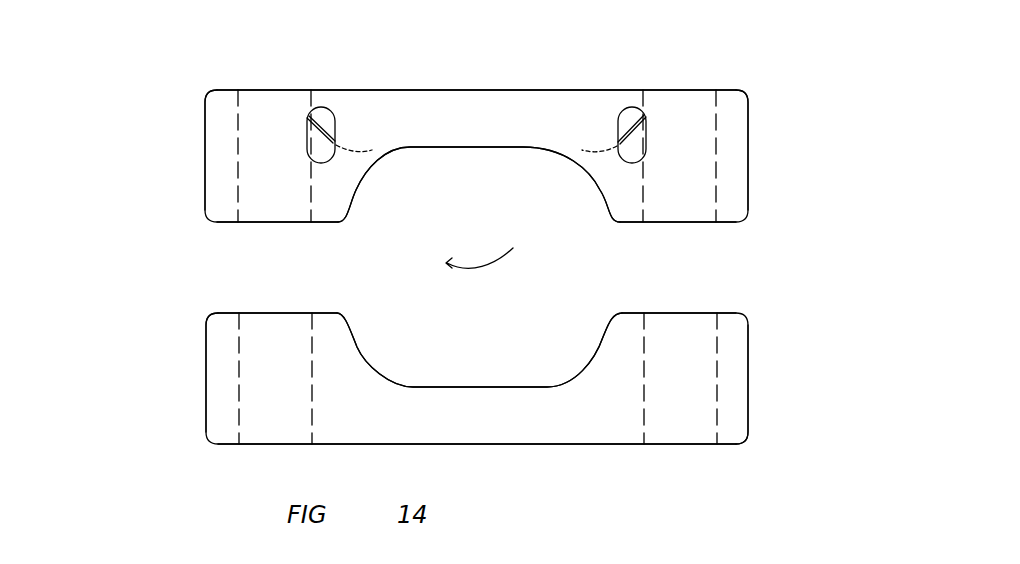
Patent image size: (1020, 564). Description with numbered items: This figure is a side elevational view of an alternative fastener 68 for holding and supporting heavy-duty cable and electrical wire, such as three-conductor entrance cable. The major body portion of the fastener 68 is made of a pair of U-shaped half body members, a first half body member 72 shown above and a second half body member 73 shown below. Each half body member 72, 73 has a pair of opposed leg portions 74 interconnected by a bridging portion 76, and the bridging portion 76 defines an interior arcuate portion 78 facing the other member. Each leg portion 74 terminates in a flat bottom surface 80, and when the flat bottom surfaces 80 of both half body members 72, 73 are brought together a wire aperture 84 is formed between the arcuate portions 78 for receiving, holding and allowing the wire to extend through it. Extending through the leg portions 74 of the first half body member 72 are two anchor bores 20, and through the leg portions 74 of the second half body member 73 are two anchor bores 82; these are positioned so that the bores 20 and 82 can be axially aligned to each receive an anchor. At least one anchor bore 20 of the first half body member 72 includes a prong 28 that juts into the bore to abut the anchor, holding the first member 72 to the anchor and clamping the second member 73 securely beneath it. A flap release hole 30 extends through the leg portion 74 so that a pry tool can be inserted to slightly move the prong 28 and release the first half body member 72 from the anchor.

The fastener 68 is at (105, 88).
The first half body member 72 is at (749, 173).
The second half body member 73 is at (749, 355).
The leg portions 74 is at (223, 115).
The anchor bores 20 is at (240, 122).
The prong 28 is at (332, 125).
The flap release hole 30 is at (336, 128).
The bridging portion 76 is at (472, 90).
The interior arcuate portion 78 is at (482, 147).
The flat bottom surface 80 is at (225, 223).
The anchor bores 82 is at (239, 358).
The wire aperture 84 is at (497, 252).